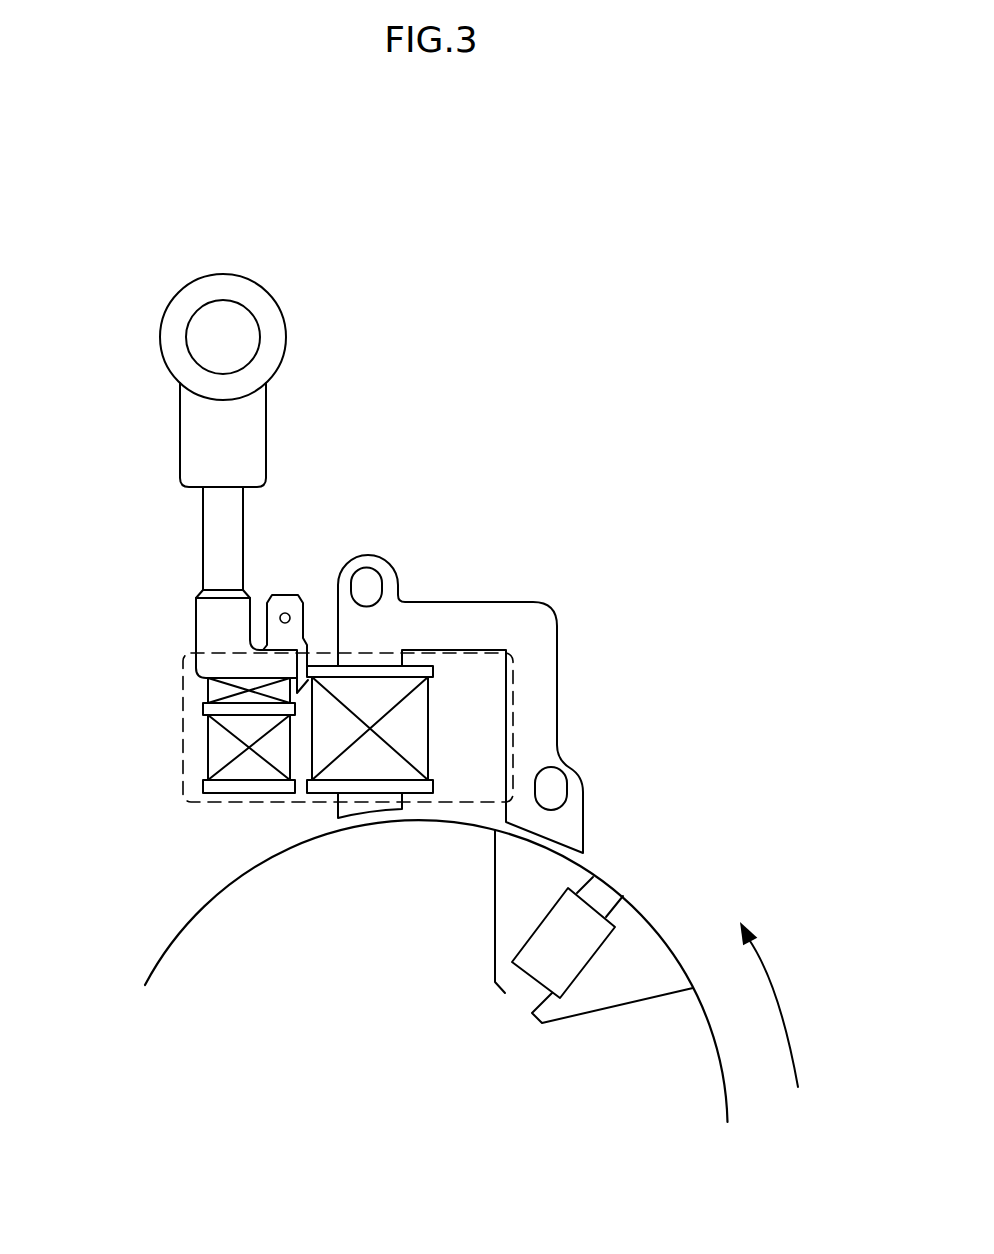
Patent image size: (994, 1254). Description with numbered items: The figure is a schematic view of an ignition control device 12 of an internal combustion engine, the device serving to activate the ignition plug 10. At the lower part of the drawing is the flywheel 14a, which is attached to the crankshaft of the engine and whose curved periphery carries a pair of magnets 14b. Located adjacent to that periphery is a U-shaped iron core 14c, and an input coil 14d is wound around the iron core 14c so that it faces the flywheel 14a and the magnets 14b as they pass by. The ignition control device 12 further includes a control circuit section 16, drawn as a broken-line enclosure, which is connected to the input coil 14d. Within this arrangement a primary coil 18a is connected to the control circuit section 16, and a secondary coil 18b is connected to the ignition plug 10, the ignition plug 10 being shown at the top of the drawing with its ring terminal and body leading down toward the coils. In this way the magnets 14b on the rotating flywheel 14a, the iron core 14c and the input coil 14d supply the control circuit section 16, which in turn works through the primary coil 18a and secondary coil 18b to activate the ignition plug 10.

The ignition plug 10 is at (165, 363).
The ignition control device 12 is at (580, 548).
The flywheel 14a is at (213, 897).
The magnets 14b is at (655, 922).
The iron core 14c is at (557, 650).
The input coil 14d is at (428, 700).
The control circuit section 16 is at (183, 790).
The primary coil 18a is at (207, 683).
The secondary coil 18b is at (207, 747).